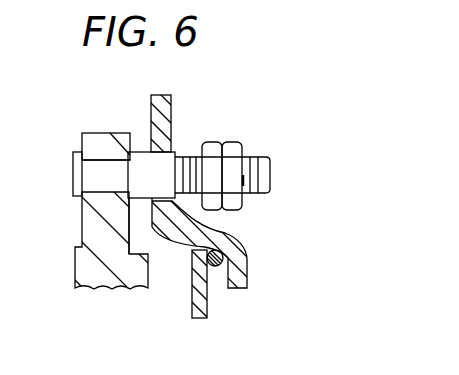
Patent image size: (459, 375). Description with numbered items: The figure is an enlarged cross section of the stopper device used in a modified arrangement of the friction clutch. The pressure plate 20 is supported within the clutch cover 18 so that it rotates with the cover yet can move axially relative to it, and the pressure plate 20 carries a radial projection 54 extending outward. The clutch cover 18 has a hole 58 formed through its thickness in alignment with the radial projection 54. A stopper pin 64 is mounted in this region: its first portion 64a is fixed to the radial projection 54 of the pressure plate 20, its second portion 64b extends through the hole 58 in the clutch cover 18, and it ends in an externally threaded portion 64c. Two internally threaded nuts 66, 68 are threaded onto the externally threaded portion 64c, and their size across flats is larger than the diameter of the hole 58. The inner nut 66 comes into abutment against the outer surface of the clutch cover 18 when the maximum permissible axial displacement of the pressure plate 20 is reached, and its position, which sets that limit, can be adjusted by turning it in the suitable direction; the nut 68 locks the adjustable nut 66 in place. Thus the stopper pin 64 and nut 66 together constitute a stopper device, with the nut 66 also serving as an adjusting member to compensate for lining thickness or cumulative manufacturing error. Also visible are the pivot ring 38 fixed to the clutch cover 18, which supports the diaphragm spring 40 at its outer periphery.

The clutch cover 18 is at (242, 277).
The pressure plate 20 is at (82, 258).
The pivot ring 38 is at (219, 251).
The diaphragm spring 40 is at (205, 297).
The radial projection 54 is at (97, 142).
The hole 58 is at (174, 151).
The stopper pin 64 is at (145, 212).
The first portion 64a is at (92, 170).
The second portion 64b is at (140, 163).
The externally threaded portion 64c is at (253, 171).
The inner nut 66 is at (211, 141).
The nut 68 is at (232, 142).